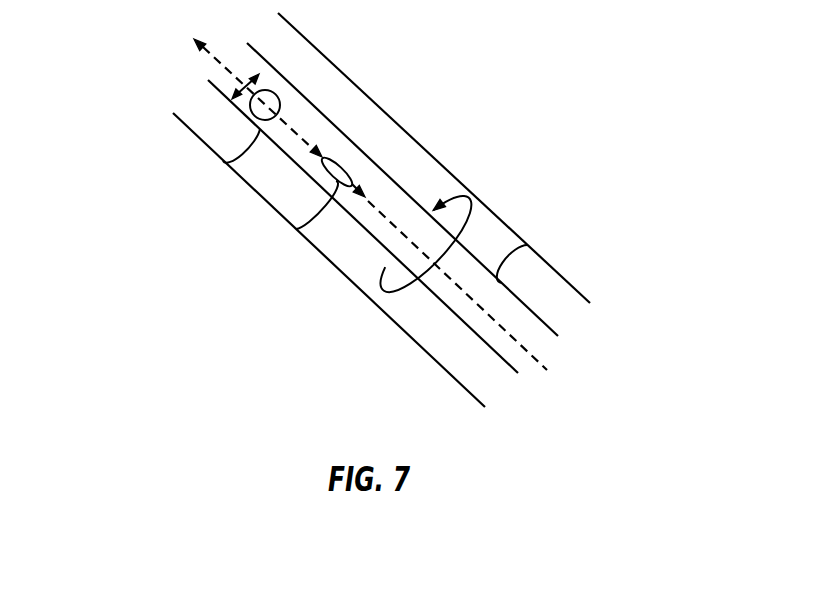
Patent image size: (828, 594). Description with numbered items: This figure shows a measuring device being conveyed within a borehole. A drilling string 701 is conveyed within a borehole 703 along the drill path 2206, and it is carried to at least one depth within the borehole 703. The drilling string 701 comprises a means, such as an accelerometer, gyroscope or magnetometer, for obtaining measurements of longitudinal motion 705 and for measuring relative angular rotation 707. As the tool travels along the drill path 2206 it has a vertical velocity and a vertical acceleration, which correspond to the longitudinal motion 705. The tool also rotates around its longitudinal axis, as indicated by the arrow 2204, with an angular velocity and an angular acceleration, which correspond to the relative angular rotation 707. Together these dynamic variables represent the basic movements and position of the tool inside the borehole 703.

The drilling string 701 is at (529, 245).
The borehole 703 is at (337, 64).
The longitudinal motion 705 is at (297, 229).
The relative angular rotation 707 is at (224, 162).
The arrow indicating rotation around longitudinal axis 2204 is at (467, 197).
The drill path 2206 is at (196, 38).